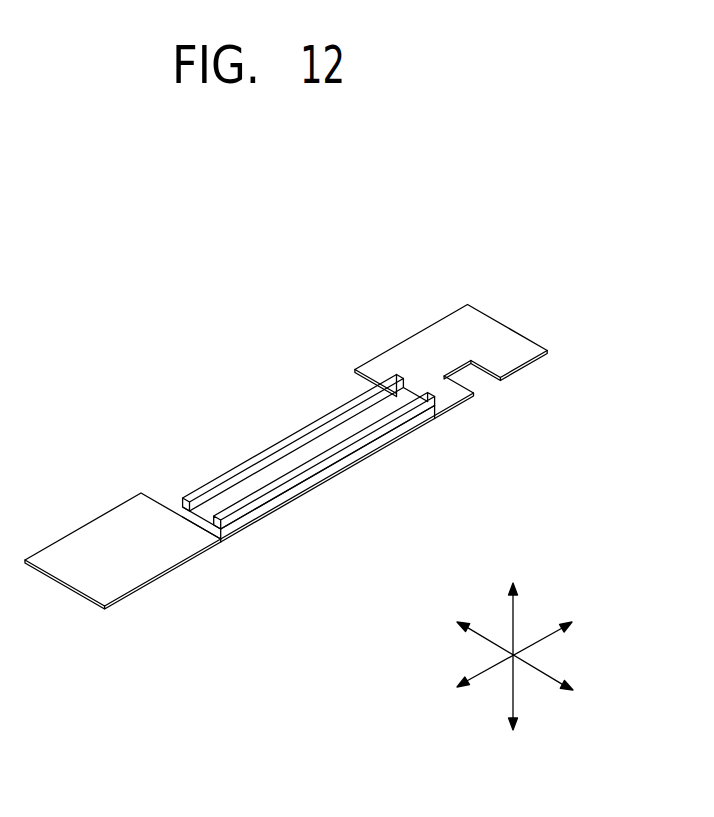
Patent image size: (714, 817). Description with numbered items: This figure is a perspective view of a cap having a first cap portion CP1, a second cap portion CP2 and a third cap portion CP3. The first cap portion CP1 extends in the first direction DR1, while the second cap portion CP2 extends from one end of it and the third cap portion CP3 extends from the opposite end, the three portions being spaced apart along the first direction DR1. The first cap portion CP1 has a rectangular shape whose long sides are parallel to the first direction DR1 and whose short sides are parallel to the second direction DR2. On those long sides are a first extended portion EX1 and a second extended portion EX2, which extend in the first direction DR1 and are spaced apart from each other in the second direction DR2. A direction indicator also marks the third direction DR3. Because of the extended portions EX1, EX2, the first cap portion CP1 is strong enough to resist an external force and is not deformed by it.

The first cap portion CP1 is at (243, 488).
The second cap portion CP2 is at (93, 547).
The third cap portion CP3 is at (422, 350).
The first extended portion EX1 is at (347, 422).
The second extended portion EX2 is at (308, 463).
The first direction DR1 is at (535, 648).
The second direction DR2 is at (536, 665).
The third direction DR3 is at (514, 640).